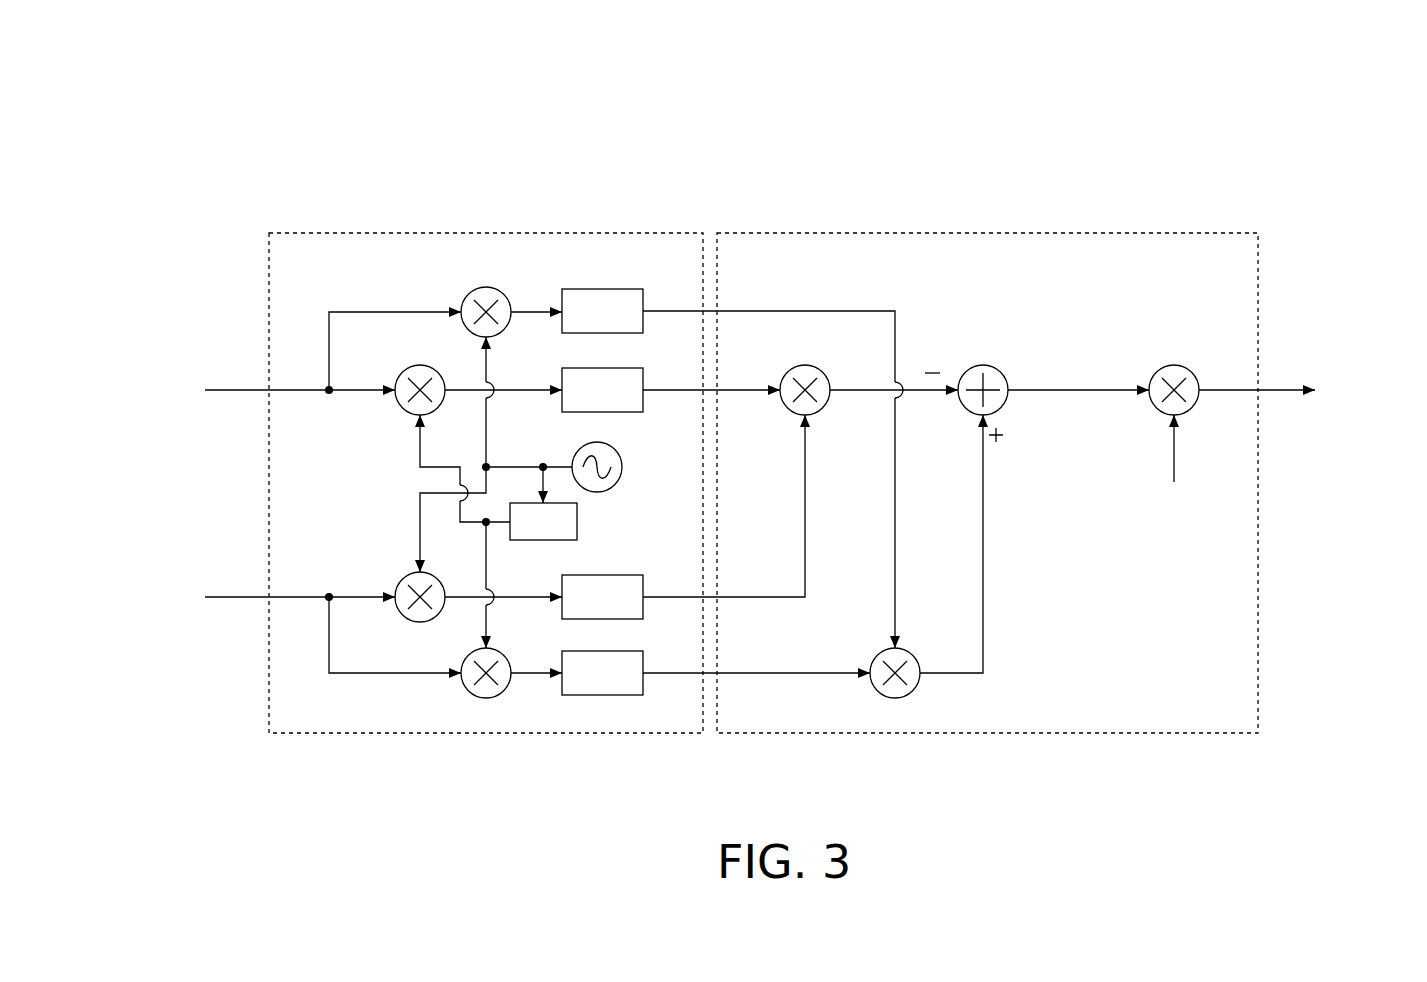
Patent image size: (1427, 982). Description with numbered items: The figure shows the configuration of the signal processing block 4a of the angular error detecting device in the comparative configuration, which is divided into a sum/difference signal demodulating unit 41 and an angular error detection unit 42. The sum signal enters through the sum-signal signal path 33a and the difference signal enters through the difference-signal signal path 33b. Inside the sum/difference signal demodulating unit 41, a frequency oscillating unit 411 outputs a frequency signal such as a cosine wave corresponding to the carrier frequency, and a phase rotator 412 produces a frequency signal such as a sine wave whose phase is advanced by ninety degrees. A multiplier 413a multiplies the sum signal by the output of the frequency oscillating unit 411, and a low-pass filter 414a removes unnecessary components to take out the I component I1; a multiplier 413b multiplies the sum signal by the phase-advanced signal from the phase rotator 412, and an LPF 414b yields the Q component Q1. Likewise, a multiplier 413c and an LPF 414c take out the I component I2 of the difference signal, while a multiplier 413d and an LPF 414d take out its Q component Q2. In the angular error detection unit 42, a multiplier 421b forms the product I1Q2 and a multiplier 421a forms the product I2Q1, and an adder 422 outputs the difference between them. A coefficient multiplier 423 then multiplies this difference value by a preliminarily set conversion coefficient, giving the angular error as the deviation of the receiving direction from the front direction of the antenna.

The signal processing block 4a is at (885, 80).
The sum/difference signal demodulating unit 41 is at (503, 232).
The angular error detection unit 42 is at (977, 232).
The sum-signal signal path 33a is at (241, 386).
The difference-signal signal path 33b is at (241, 593).
The frequency oscillating unit 411 is at (617, 481).
The phase rotator 412 is at (577, 520).
The multiplier 413a is at (497, 270).
The multiplier 413b is at (435, 368).
The multiplier 413c is at (400, 583).
The multiplier 413d is at (486, 698).
The low-pass filter 414a is at (612, 270).
The low-pass filter 414b is at (630, 412).
The low-pass filter 414c is at (615, 558).
The low-pass filter 414d is at (602, 697).
The multiplier 421a is at (820, 348).
The multiplier 421b is at (895, 698).
The adder 422 is at (975, 367).
The coefficient multiplier 423 is at (1172, 367).